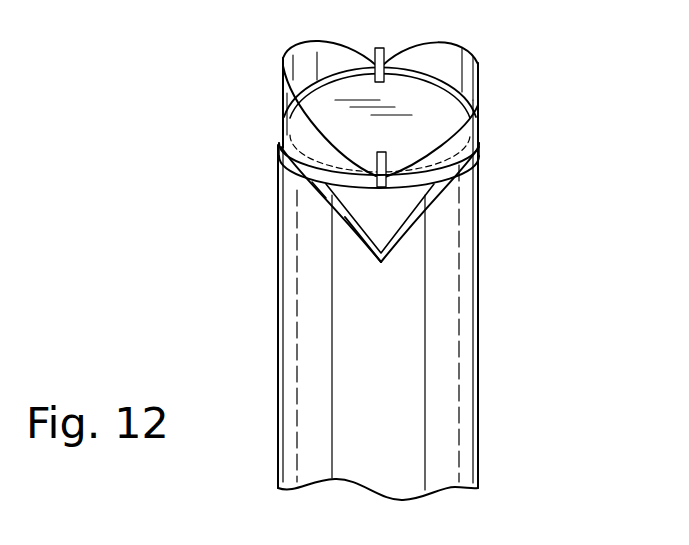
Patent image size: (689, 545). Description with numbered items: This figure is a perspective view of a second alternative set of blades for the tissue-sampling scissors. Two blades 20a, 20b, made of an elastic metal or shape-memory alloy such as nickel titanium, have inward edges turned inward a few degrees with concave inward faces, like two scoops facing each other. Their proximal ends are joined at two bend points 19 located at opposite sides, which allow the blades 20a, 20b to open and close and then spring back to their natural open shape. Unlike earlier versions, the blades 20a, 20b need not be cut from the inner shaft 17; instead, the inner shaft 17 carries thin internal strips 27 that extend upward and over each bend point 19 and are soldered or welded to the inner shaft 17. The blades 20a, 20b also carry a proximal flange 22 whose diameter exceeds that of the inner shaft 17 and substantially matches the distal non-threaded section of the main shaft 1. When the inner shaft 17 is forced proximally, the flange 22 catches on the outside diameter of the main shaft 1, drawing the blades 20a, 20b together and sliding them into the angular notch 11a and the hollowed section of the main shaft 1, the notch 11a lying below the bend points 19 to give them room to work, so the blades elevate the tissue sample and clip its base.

The main shaft 1 is at (480, 365).
The angular notch 11a is at (363, 238).
The inner shaft 17 is at (398, 206).
The bend point 19 is at (478, 146).
The blade 20a is at (479, 99).
The blade 20b is at (283, 99).
The proximal flange 22 is at (322, 184).
The thin strip 27 is at (379, 47).